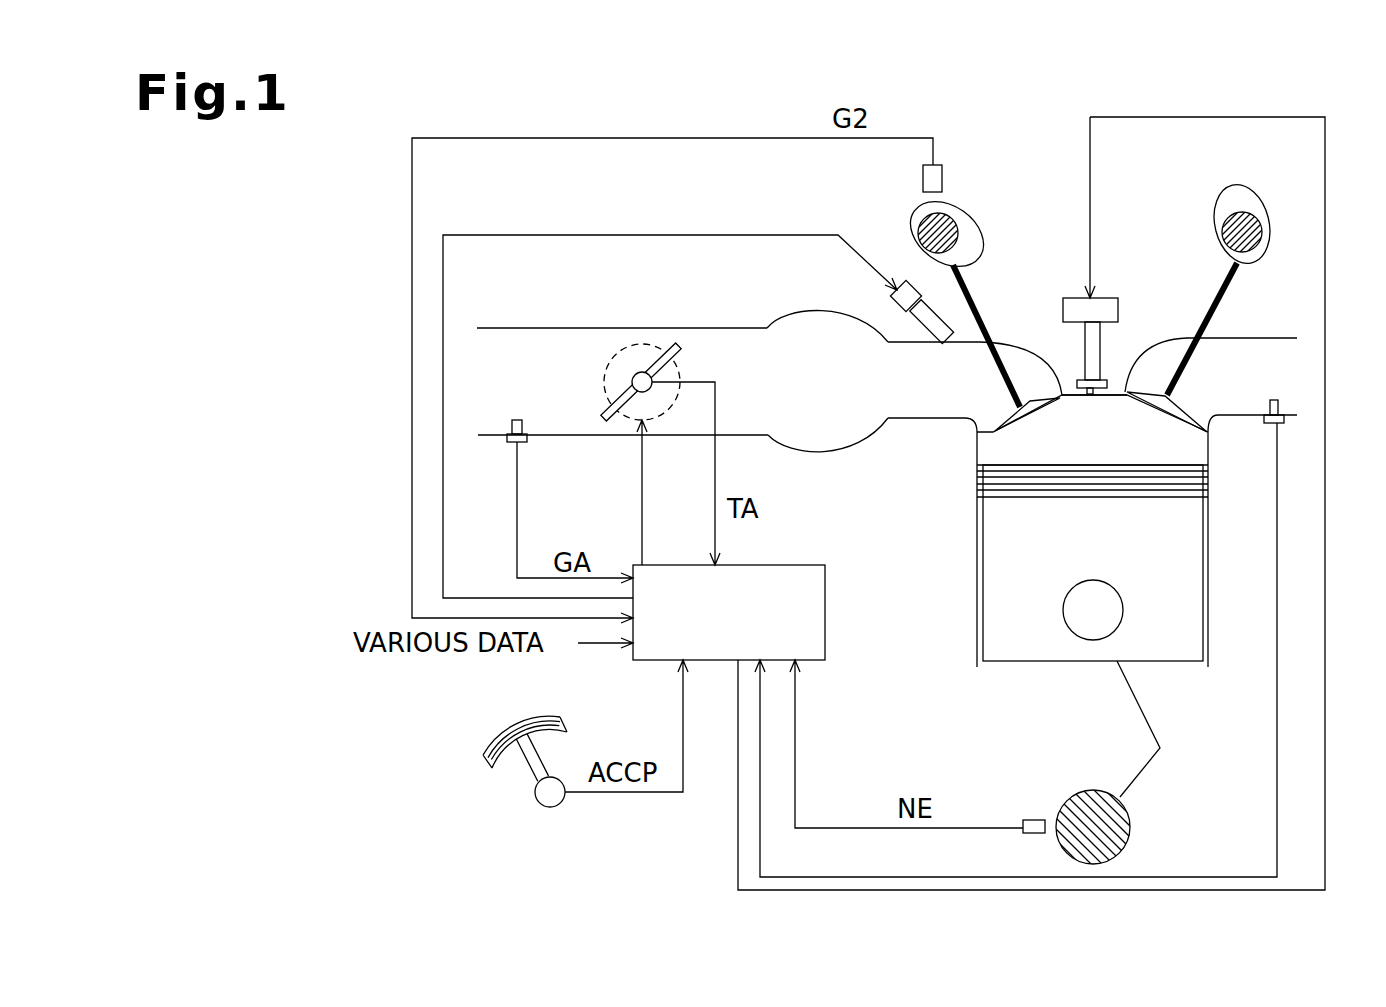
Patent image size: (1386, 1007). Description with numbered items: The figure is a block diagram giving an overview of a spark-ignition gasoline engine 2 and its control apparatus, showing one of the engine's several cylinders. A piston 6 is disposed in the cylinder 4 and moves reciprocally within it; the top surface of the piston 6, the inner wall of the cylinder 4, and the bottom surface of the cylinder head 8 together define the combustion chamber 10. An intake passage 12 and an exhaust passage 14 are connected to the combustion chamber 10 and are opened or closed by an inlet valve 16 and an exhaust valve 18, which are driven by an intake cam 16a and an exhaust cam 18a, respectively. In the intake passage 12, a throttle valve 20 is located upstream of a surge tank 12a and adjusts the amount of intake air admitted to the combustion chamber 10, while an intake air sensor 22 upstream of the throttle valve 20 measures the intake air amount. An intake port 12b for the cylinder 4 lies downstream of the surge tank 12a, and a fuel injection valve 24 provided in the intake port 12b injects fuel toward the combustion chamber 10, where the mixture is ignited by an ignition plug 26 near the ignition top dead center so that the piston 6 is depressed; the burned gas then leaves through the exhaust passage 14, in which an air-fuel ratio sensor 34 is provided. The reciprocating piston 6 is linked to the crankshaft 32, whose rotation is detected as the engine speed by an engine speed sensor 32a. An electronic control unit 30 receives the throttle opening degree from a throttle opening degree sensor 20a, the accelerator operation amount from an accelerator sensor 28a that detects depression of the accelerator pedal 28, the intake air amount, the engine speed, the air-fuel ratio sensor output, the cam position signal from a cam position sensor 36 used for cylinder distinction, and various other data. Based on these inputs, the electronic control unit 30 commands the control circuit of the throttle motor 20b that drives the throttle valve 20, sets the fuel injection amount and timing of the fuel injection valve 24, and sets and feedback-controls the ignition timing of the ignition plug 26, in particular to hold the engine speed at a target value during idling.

The spark-ignition engine 2 is at (1121, 555).
The cylinder 4 is at (1210, 530).
The piston 6 is at (1180, 652).
The cylinder head 8 is at (1208, 430).
The combustion chamber 10 is at (1195, 448).
The intake passage 12 is at (536, 328).
The surge tank 12a is at (813, 458).
The intake port 12b is at (948, 405).
The exhaust passage 14 is at (1270, 338).
The inlet valve 16 is at (973, 288).
The intake cam 16a is at (987, 217).
The exhaust valve 18 is at (1208, 290).
The exhaust cam 18a is at (1252, 183).
The throttle valve 20 is at (679, 423).
The throttle opening degree sensor 20a is at (635, 370).
The throttle motor 20b is at (680, 373).
The intake air sensor 22 is at (517, 420).
The fuel injection valve 24 is at (921, 333).
The ignition plug 26 is at (1100, 351).
The accelerator pedal 28 is at (495, 741).
The accelerator sensor 28a is at (551, 808).
The electronic control unit (ECU) 30 is at (825, 632).
The crankshaft 32 is at (1130, 820).
The engine speed sensor 32a is at (1030, 820).
The air-fuel ratio sensor 34 is at (1270, 402).
The cam position sensor 36 is at (942, 178).